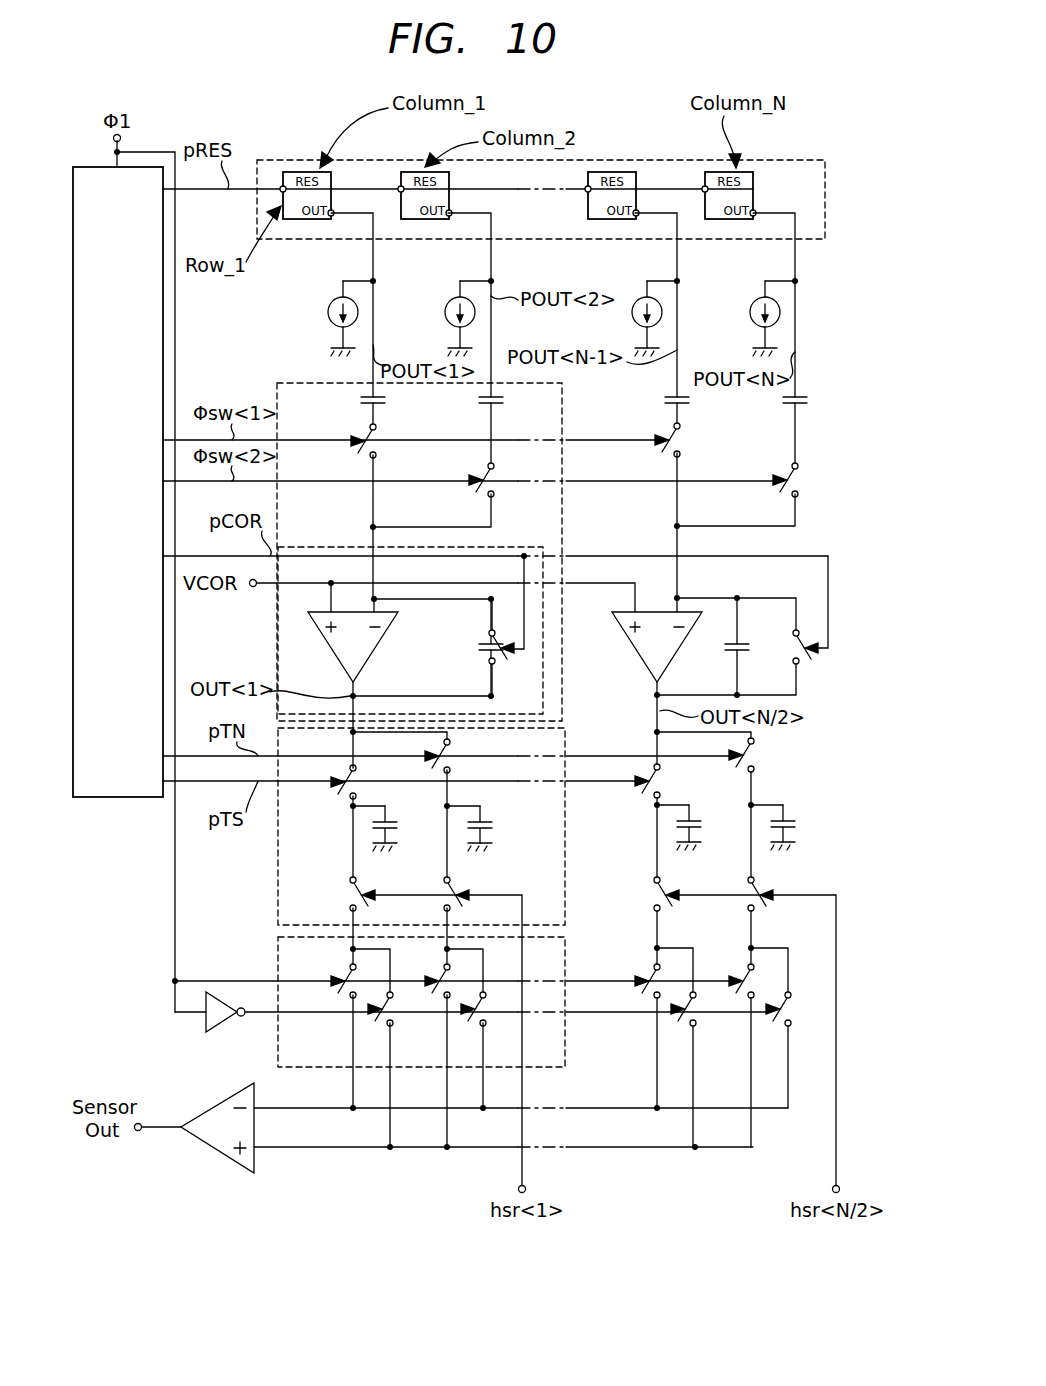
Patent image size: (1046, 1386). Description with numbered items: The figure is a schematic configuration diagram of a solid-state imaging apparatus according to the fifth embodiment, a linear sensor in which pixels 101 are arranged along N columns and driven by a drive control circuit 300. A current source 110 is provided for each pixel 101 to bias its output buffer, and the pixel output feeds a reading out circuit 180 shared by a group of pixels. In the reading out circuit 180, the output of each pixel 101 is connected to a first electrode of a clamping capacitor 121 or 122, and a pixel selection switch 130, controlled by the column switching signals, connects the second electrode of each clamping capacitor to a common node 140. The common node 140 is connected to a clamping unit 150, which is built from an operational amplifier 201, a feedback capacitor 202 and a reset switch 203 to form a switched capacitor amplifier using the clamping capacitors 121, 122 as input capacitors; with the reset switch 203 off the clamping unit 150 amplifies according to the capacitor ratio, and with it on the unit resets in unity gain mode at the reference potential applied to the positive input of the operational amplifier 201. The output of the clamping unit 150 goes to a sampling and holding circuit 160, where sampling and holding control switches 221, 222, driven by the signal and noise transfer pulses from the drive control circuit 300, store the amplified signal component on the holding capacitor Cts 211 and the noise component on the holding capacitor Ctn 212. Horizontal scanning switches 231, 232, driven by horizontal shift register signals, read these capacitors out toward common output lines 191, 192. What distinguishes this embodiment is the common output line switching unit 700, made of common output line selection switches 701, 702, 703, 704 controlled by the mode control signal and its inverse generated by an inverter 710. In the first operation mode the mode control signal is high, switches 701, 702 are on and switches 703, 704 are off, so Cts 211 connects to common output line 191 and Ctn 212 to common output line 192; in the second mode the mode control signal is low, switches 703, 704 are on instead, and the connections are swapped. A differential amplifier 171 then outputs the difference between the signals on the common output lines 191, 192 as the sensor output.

The drive control circuit 300 is at (76, 166).
The pixel 101 is at (331, 178).
The current source 110 is at (328, 312).
The clamping capacitor 121 is at (360, 401).
The clamping capacitor 122 is at (478, 400).
The pixel selection switch 130 is at (357, 437).
The common node 140 is at (372, 527).
The clamping unit 150 is at (519, 546).
The reading out circuit 180 is at (565, 670).
The operational amplifier 201 is at (366, 660).
The feedback capacitor 202 is at (491, 644).
The reset switch 203 is at (503, 670).
The sampling and holding circuit 160 is at (565, 826).
The holding capacitor (Cts) 211 is at (388, 818).
The holding capacitor (Ctn) 212 is at (488, 820).
The sampling and holding control switch 221 is at (345, 792).
The sampling and holding control switch 222 is at (448, 758).
The horizontal scanning switch 231 is at (357, 900).
The horizontal scanning switch 232 is at (458, 900).
The common output line switching unit 700 is at (565, 950).
The common output line selection switch 701 is at (345, 984).
The common output line selection switch 702 is at (440, 974).
The common output line selection switch 703 is at (398, 1022).
The common output line selection switch 704 is at (490, 1016).
The inverter 710 is at (224, 1032).
The differential amplifier 171 is at (216, 1100).
The common output line 191 is at (300, 1108).
The common output line 192 is at (308, 1143).